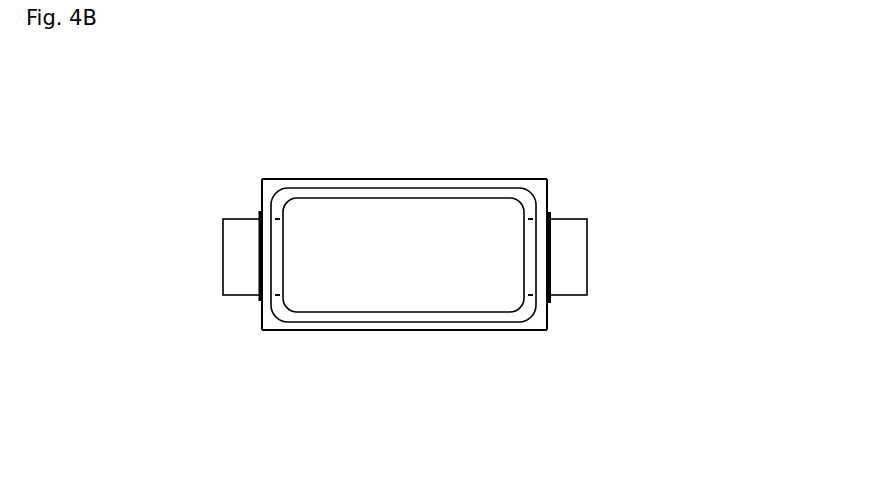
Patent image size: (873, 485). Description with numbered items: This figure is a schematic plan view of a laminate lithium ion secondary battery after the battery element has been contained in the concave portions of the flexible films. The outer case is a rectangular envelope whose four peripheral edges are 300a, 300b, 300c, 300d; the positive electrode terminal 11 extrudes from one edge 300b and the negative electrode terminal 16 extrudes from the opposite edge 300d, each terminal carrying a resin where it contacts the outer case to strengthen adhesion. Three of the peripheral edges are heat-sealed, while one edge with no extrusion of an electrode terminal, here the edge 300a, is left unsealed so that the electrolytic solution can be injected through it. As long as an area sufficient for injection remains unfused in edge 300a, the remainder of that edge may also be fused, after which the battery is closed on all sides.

The unsealed edge 300a is at (398, 178).
The peripheral edge 300b is at (548, 200).
The peripheral edge 300c is at (483, 332).
The peripheral edge 300d is at (260, 303).
The negative electrode terminal 16 is at (235, 262).
The positive electrode terminal 11 is at (573, 253).